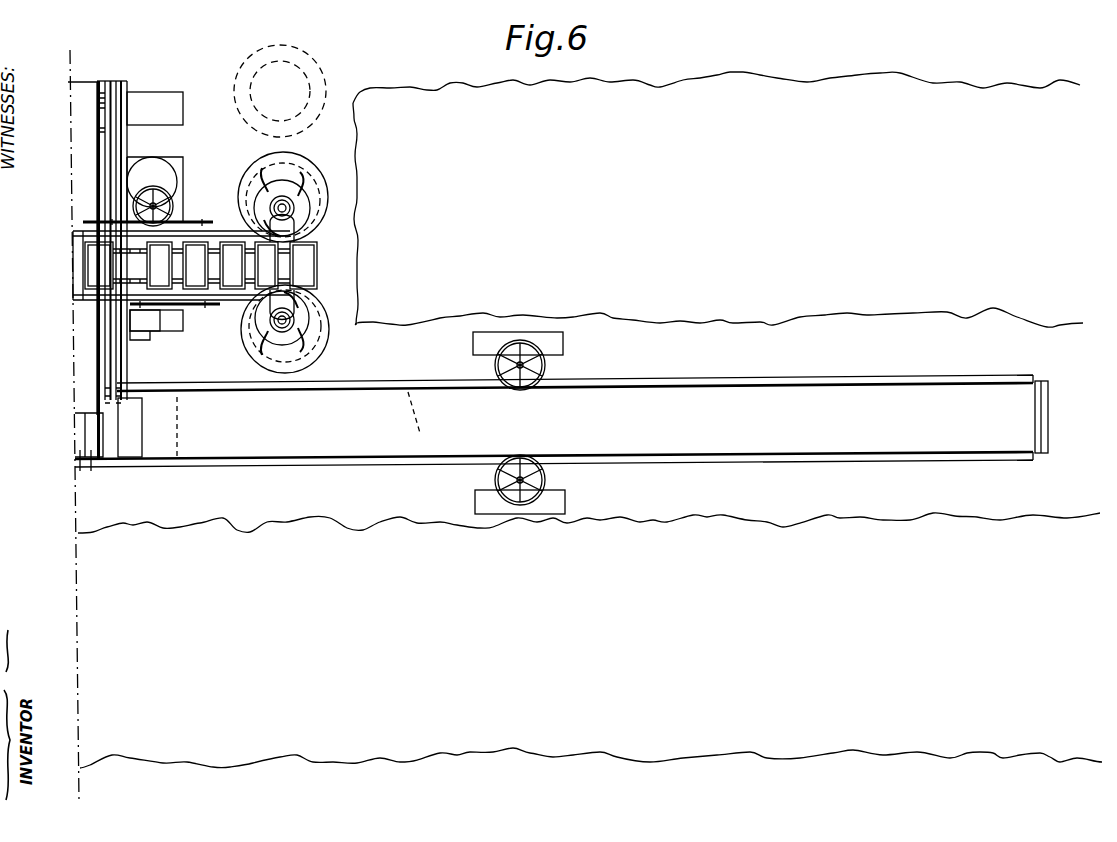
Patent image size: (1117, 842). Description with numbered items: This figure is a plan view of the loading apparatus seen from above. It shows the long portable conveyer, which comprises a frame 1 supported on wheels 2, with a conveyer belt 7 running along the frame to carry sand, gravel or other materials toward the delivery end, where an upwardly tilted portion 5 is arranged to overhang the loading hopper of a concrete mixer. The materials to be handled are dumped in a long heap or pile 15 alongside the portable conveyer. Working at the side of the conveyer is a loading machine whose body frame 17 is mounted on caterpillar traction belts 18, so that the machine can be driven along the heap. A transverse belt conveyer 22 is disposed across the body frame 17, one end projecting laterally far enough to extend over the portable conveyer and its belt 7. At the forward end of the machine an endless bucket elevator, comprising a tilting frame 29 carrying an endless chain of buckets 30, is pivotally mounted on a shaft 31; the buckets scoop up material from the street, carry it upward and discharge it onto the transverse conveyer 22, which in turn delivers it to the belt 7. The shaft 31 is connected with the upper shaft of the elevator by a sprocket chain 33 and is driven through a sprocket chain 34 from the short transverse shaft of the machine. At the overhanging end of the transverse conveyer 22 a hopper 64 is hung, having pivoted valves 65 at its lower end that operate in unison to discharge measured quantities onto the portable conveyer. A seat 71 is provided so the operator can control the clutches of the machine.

The frame 1 is at (634, 462).
The wheels 2 is at (473, 345).
The upwardly tilted portion 5 is at (800, 93).
The conveyer belt 7 is at (888, 436).
The heap or pile 15 is at (777, 747).
The body frame 17 is at (128, 80).
The caterpillar traction belts 18 is at (163, 95).
The transverse belt conveyer 22 is at (78, 90).
The tilting frame 29 is at (218, 230).
The endless chain of buckets 30 is at (265, 282).
The shaft 31 is at (205, 308).
The sprocket chain 33 is at (88, 221).
The sprocket chain 34 is at (158, 312).
The hopper 64 is at (142, 440).
The pivoted valves 65 is at (89, 474).
The seat 71 is at (163, 176).